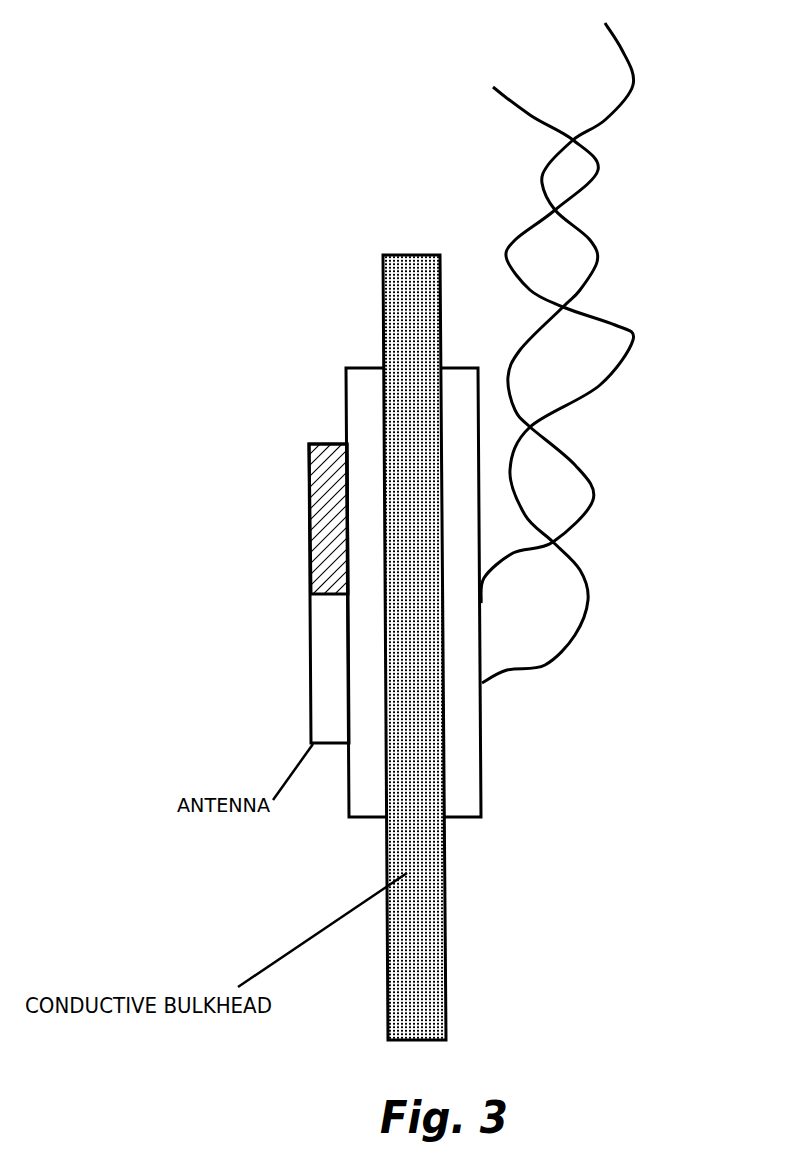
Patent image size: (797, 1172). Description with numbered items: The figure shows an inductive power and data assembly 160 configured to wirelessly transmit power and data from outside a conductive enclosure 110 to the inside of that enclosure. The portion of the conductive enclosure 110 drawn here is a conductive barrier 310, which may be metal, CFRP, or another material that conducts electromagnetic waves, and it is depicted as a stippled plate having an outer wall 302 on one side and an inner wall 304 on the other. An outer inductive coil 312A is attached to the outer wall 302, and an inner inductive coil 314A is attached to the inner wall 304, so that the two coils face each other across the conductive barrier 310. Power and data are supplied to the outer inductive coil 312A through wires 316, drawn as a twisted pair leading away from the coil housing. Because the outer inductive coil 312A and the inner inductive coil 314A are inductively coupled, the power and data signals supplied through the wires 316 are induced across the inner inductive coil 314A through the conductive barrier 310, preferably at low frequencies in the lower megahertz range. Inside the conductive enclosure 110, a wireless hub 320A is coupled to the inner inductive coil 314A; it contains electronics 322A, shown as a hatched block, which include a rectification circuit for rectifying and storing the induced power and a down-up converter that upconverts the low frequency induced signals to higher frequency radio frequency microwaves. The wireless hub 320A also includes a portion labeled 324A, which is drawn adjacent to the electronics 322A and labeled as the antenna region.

The inductive power and data assembly 160 is at (198, 90).
The outer wall 302 is at (453, 864).
The inner wall 304 is at (380, 957).
The conductive barrier 310 is at (438, 1012).
The conductive enclosure 110 is at (438, 932).
The outer inductive coil 312A is at (468, 777).
The inner inductive coil 314A is at (355, 791).
The wires 316 is at (633, 83).
The wireless hub 320A is at (302, 613).
The electronics 322A is at (318, 521).
The antenna substrate 324A is at (324, 677).